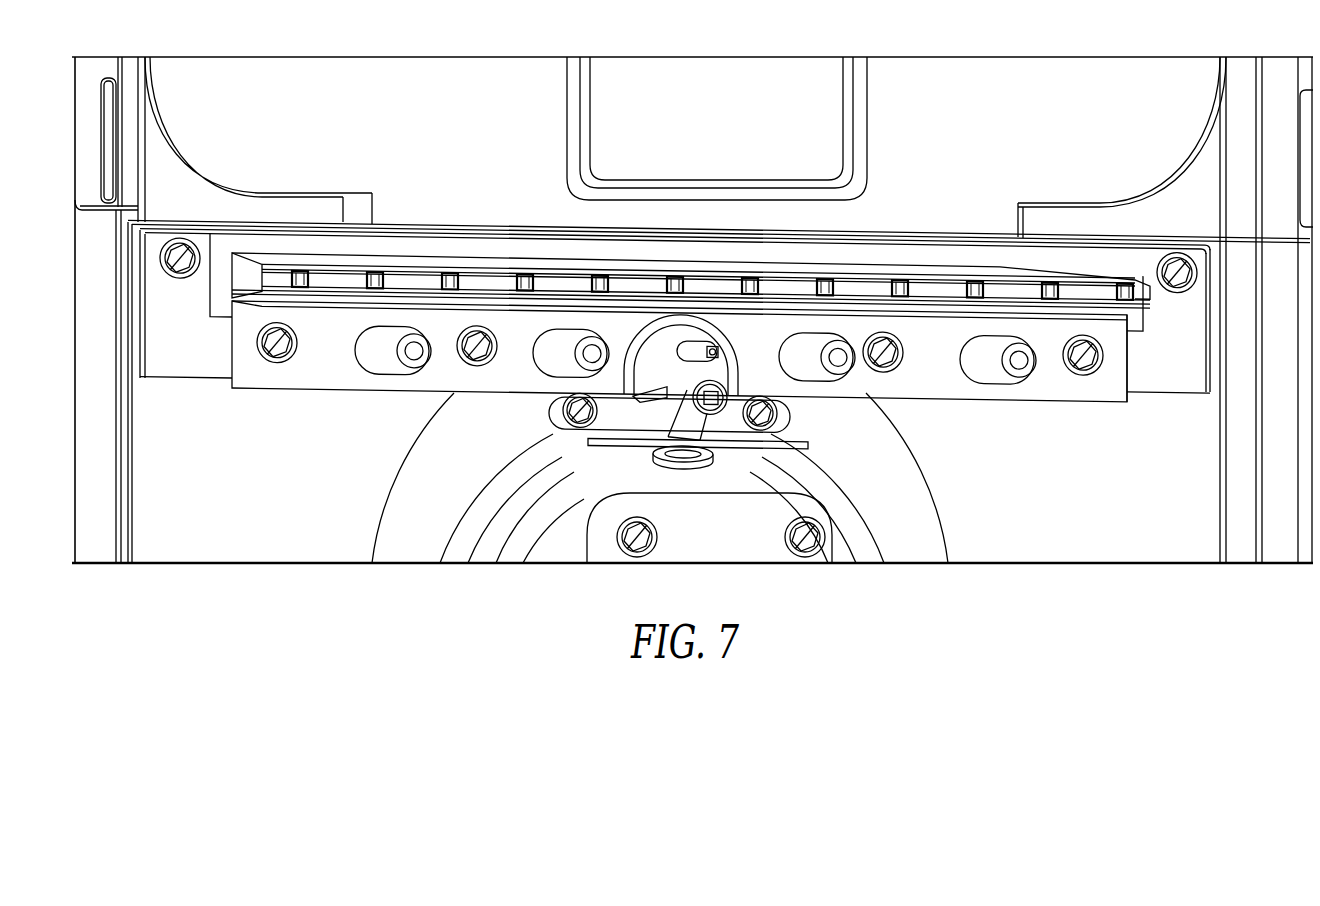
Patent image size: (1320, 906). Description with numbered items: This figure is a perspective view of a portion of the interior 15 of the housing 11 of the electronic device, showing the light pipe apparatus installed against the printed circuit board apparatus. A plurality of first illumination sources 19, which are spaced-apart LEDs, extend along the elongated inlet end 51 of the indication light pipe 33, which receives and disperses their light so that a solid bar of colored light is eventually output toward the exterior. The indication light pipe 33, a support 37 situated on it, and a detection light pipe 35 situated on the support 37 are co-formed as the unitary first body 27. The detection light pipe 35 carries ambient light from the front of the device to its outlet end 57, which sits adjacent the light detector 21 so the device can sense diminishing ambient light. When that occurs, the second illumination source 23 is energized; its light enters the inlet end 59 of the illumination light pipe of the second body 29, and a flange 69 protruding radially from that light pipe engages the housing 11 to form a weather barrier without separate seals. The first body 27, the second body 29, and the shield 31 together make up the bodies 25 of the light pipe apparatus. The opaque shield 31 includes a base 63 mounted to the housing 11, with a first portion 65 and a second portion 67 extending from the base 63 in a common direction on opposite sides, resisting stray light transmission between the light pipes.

The housing 11 is at (1064, 541).
The interior 15 is at (1133, 529).
The first illumination sources 19 is at (386, 278).
The light detector 21 is at (720, 347).
The second illumination source 23 is at (775, 437).
The bodies 25 is at (1205, 483).
The first body 27 is at (1143, 367).
The second body 29 is at (664, 417).
The shield 31 is at (213, 372).
The indication light pipe 33 is at (990, 262).
The detection light pipe 35 is at (692, 348).
The support 37 is at (632, 318).
The inlet end 51 is at (933, 283).
The outlet end 57 is at (718, 355).
The inlet end 59 is at (697, 386).
The base 63 is at (276, 375).
The first portion 65 is at (330, 294).
The second portion 67 is at (660, 414).
The flange 69 is at (708, 408).